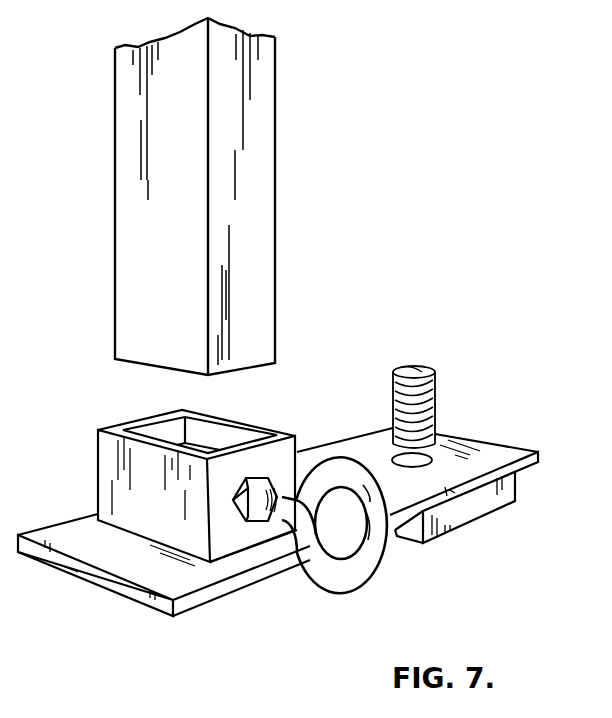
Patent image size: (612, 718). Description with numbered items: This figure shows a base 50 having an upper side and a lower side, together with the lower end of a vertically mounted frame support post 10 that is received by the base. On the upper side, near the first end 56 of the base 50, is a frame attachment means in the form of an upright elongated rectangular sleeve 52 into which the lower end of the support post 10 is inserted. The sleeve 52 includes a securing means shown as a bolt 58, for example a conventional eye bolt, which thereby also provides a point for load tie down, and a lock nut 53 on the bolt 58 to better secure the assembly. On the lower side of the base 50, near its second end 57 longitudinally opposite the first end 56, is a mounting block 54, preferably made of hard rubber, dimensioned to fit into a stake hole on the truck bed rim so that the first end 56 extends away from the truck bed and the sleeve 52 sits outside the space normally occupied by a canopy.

The fence post 10 is at (276, 171).
The base 50 is at (455, 552).
The rectangular sleeve 52 is at (105, 450).
The lock nut 53 is at (263, 522).
The mounting block 54 is at (487, 511).
The first end 56 is at (113, 577).
The second end 57 is at (480, 438).
The bolt 58 is at (358, 568).